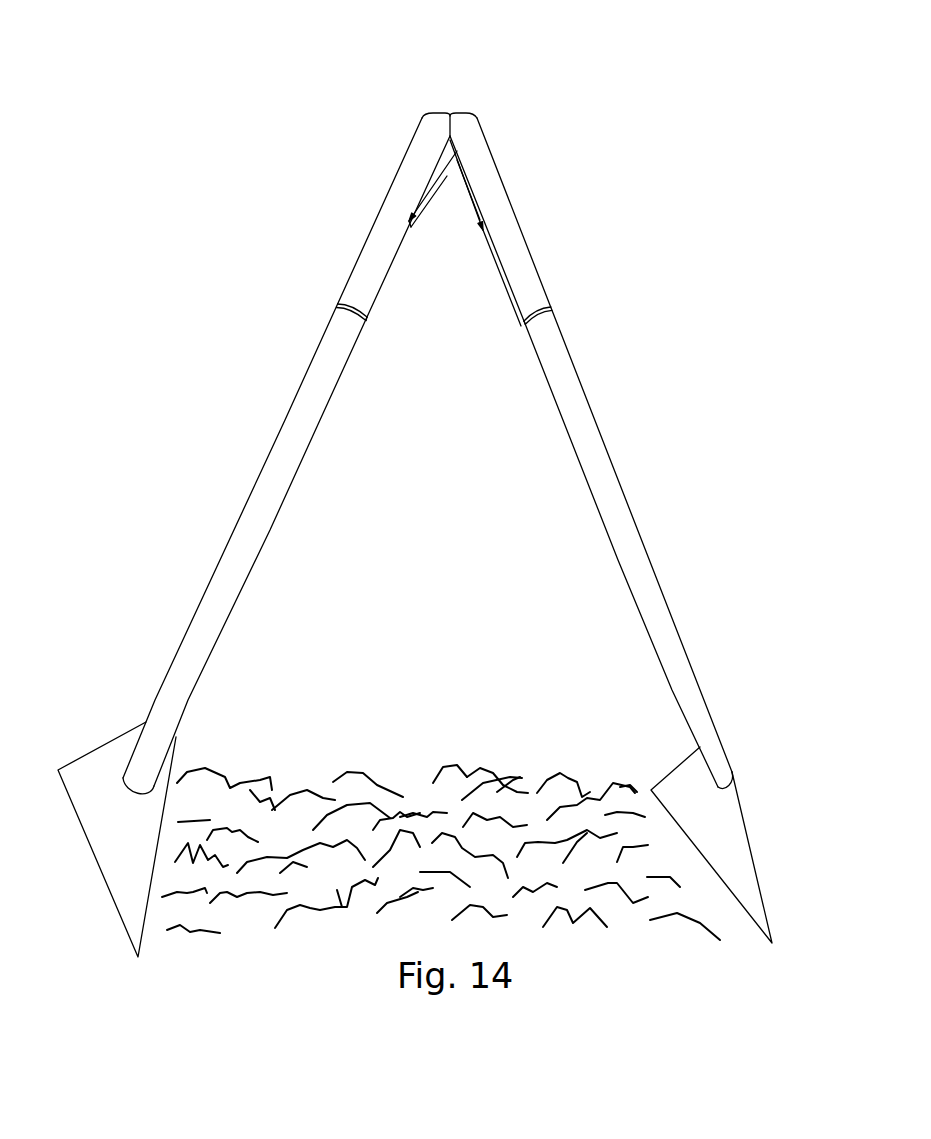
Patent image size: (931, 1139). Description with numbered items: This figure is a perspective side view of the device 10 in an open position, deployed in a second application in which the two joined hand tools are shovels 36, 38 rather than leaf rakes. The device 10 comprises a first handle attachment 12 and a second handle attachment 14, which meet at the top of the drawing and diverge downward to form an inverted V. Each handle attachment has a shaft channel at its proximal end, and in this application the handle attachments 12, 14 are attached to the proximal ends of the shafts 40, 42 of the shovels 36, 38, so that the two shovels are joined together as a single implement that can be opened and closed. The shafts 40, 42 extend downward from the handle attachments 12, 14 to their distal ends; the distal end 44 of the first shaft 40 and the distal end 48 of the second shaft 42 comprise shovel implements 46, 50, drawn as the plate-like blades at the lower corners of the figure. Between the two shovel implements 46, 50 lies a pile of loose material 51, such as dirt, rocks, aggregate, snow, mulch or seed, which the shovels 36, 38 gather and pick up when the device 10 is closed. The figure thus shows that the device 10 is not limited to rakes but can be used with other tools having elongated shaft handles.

The device 10 is at (519, 107).
The first handle attachment 12 is at (398, 180).
The second handle attachment 14 is at (494, 176).
The shovel 36 is at (238, 368).
The shovel 38 is at (654, 402).
The shaft 40 is at (313, 375).
The shaft 42 is at (568, 370).
The lower end of first pole 44 is at (152, 753).
The shovel implement 46 is at (137, 722).
The distal end of the shaft 48 is at (717, 760).
The shovel implement 50 is at (732, 833).
The loose material 51 is at (440, 807).